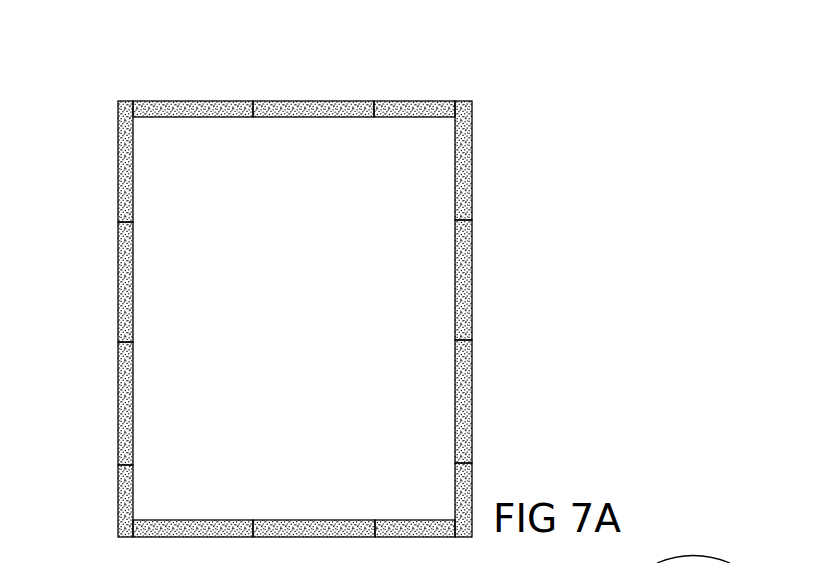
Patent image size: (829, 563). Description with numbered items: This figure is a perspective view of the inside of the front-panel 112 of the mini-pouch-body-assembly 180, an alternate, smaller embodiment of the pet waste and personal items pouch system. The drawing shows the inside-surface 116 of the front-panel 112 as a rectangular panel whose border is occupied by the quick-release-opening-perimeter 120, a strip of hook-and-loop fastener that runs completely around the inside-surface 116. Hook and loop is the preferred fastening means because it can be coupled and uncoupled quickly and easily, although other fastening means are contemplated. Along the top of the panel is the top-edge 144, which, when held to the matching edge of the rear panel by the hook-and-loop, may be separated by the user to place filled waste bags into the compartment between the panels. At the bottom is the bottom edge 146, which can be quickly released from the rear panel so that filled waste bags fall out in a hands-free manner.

The front-panel 112 is at (327, 291).
The inside-surface 116 is at (410, 329).
The quick-release-opening-perimeter 120 is at (173, 107).
The top-edge 144 is at (292, 98).
The bottom edge 146 is at (128, 539).
The mini-pouch-body-assembly 180 is at (672, 243).